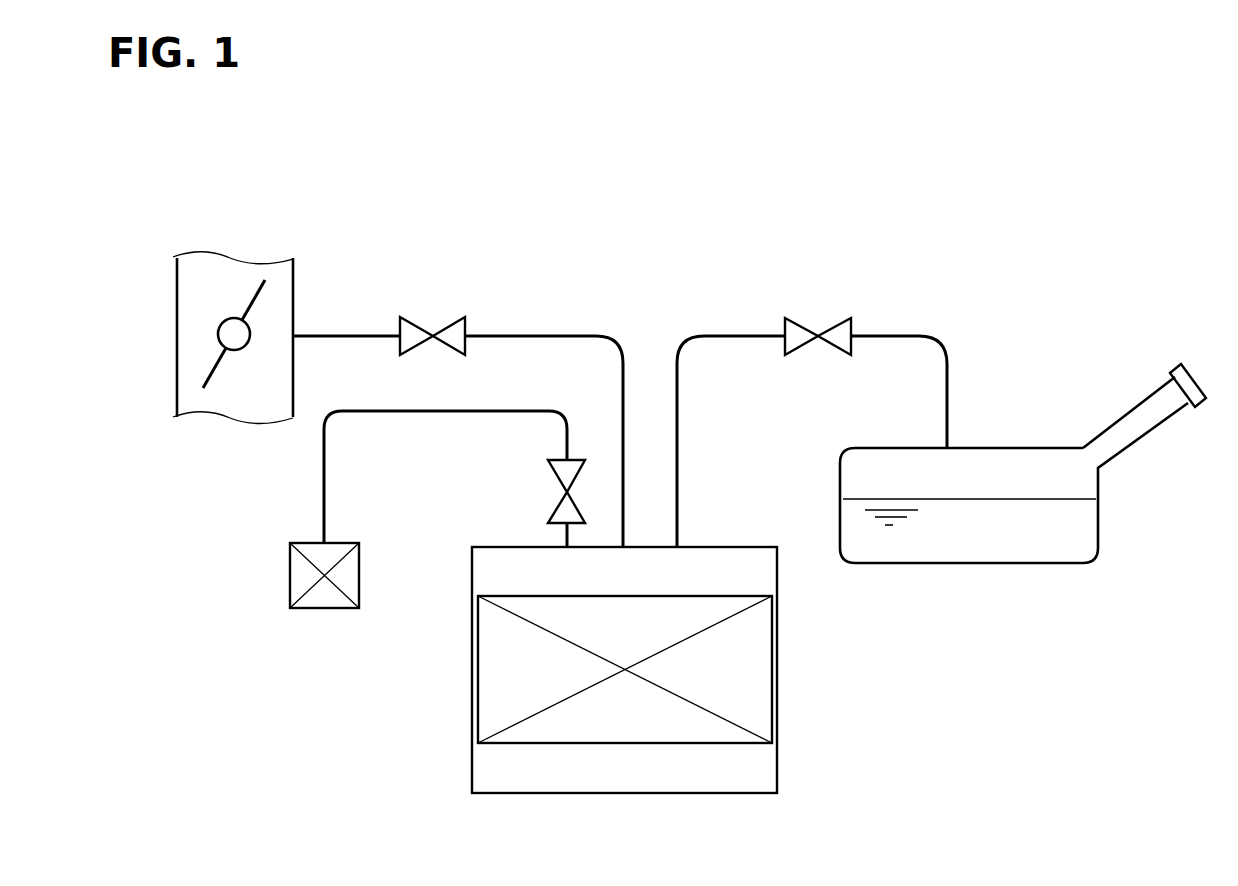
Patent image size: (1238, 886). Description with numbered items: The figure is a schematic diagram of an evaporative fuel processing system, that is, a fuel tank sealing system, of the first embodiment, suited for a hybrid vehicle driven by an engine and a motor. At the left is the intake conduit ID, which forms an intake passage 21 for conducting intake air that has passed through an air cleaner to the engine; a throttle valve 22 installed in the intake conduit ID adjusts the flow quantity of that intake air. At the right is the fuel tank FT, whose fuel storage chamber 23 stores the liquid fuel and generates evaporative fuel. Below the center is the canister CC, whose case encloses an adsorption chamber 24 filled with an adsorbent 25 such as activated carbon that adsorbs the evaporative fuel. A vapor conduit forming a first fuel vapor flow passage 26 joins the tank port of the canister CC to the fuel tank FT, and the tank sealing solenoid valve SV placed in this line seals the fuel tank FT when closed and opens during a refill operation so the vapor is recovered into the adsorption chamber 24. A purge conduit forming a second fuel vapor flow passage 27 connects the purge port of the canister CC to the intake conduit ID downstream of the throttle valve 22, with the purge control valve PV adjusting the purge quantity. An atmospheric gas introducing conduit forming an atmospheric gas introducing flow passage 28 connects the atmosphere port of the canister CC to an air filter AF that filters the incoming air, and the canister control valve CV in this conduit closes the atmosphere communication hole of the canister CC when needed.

The intake conduit ID is at (293, 284).
The intake passage 21 is at (247, 408).
The throttle valve 22 is at (256, 292).
The fuel storage chamber 23 is at (1080, 482).
The adsorption chamber 24 is at (760, 568).
The adsorbent 25 is at (752, 655).
The first fuel vapor flow passage 26 is at (706, 336).
The second fuel vapor flow passage 27 is at (540, 336).
The atmospheric gas introducing flow passage 28 is at (422, 412).
The purge control valve PV is at (445, 318).
The tank sealing solenoid valve SV is at (828, 318).
The canister control valve CV is at (556, 480).
The fuel tank FT is at (1003, 448).
The air filter AF is at (360, 568).
The canister CC is at (778, 763).